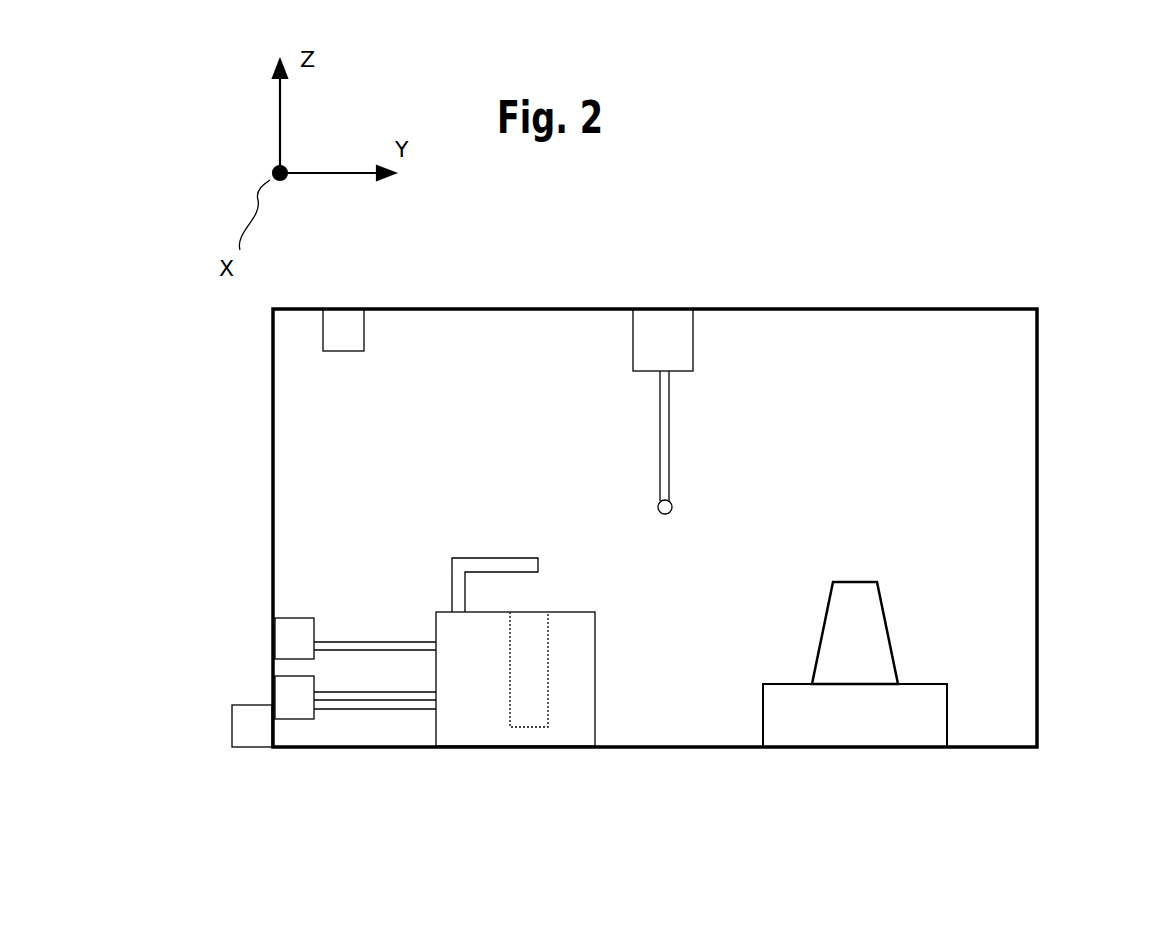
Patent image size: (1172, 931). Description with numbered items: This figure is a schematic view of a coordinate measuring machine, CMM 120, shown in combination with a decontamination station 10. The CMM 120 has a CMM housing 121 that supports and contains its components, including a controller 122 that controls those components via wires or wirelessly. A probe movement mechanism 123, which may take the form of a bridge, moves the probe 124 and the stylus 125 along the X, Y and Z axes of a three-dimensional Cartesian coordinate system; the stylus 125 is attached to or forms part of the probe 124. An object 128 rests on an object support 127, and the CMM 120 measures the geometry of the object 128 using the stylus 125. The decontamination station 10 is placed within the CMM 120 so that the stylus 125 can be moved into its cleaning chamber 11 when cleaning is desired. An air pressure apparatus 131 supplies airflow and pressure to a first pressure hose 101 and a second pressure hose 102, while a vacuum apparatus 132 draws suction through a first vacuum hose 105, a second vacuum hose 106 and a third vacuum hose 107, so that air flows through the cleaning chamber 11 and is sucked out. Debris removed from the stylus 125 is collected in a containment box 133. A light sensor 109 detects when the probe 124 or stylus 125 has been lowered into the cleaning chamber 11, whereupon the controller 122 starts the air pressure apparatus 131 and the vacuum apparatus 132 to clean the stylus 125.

The decontamination station 10 is at (561, 687).
The cleaning chamber 11 is at (548, 707).
The first pressure hose 101 is at (366, 648).
The second pressure hose 102 is at (340, 641).
The first vacuum hose 105 is at (394, 709).
The second vacuum hose 106 is at (360, 701).
The third vacuum hose 107 is at (342, 692).
The light sensor 109 is at (531, 563).
The CMM 120 is at (676, 467).
The CMM housing 121 is at (977, 305).
The controller 122 is at (359, 327).
The probe movement mechanism 123 is at (668, 325).
The probe 124 is at (670, 467).
The stylus 125 is at (673, 507).
The object support 127 is at (843, 731).
The object 128 is at (877, 622).
The air pressure apparatus 131 is at (283, 636).
The vacuum apparatus 132 is at (297, 713).
The containment box 133 is at (236, 725).